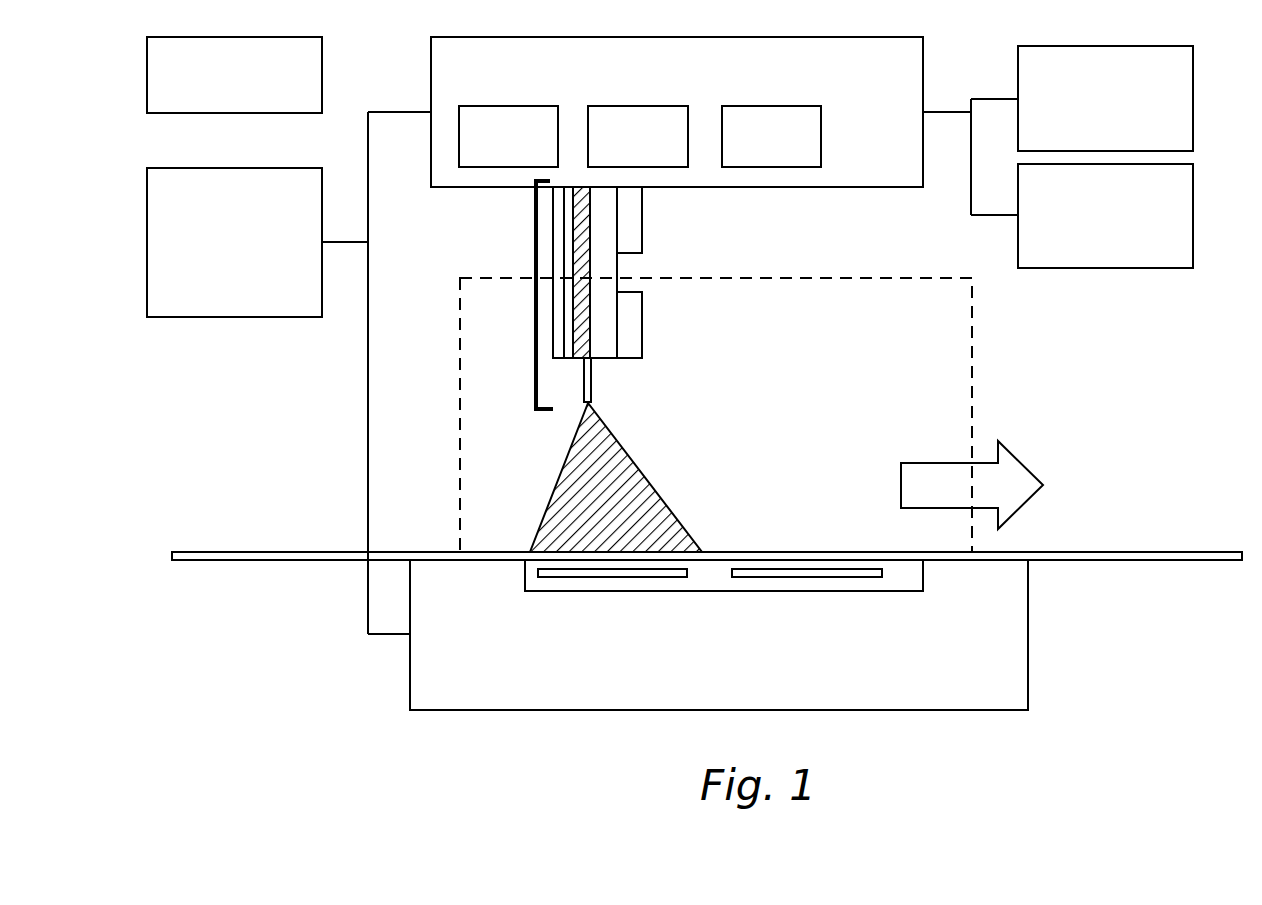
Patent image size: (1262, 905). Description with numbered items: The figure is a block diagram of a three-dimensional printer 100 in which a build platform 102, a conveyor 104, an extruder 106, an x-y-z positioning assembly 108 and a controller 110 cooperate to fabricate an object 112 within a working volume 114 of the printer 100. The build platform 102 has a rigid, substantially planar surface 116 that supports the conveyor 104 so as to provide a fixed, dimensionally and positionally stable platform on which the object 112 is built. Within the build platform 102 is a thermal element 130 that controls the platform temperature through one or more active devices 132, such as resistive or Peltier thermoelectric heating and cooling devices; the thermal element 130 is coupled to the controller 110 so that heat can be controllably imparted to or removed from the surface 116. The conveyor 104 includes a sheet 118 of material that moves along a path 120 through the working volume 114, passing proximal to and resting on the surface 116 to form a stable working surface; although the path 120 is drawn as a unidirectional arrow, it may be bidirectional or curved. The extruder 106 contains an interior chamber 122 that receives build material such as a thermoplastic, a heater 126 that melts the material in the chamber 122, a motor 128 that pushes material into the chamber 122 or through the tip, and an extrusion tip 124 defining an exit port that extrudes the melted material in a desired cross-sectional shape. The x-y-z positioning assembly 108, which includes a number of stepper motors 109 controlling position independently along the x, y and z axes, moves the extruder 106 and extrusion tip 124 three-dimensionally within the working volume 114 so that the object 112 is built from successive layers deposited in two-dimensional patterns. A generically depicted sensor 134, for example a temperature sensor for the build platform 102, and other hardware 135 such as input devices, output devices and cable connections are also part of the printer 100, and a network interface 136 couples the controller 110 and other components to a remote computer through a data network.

The printer 100 is at (1178, 390).
The build platform 102 is at (969, 688).
The conveyor 104 is at (237, 552).
The extruder 106 is at (536, 243).
The x-y-z positioning assembly 108 is at (473, 87).
The stepper motors 109 is at (486, 147).
The controller 110 is at (186, 221).
The object 112 is at (637, 462).
The working volume 114 is at (972, 412).
The surface 116 is at (502, 563).
The sheet of material 118 is at (1070, 551).
The path 120 is at (919, 496).
The chamber 122 is at (568, 308).
The extrusion tip 124 is at (584, 379).
The heater 126 is at (643, 322).
The motor 128 is at (643, 220).
The thermal element 130 is at (678, 592).
The active devices 132 is at (827, 580).
The sensor 134 is at (1054, 116).
The other hardware 135 is at (1059, 221).
The network interface 136 is at (180, 87).